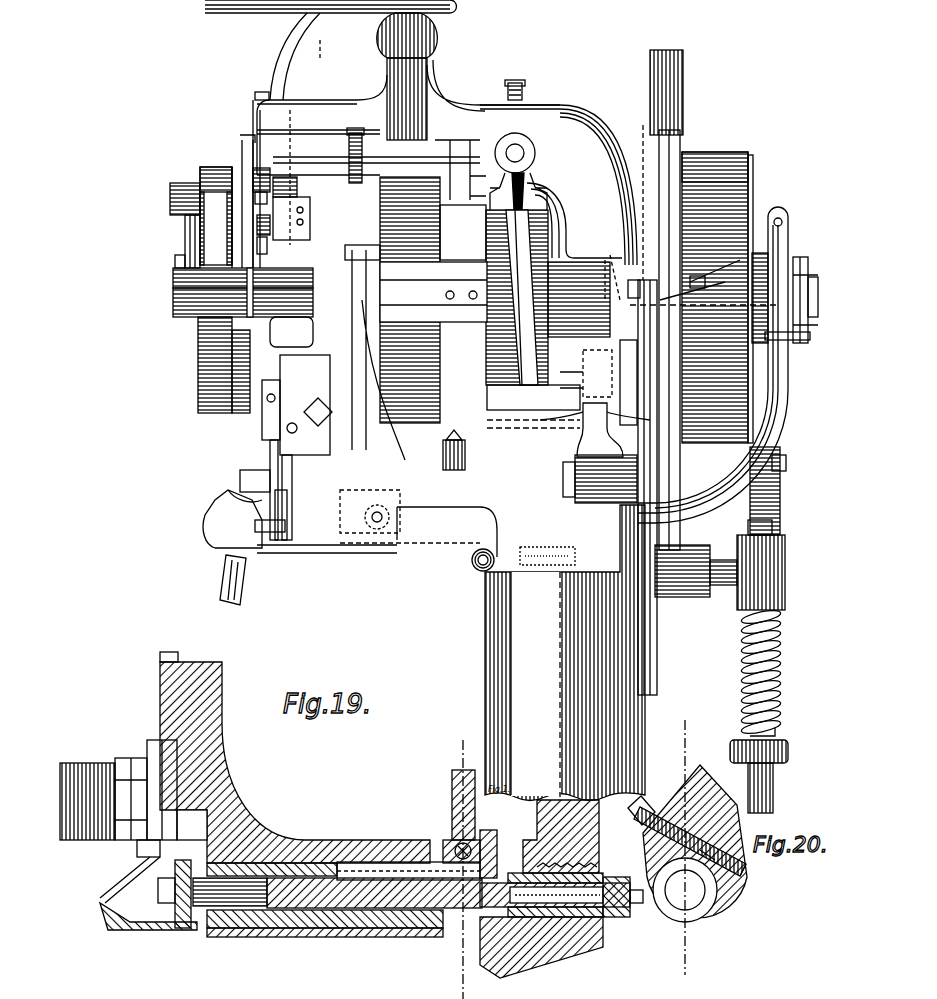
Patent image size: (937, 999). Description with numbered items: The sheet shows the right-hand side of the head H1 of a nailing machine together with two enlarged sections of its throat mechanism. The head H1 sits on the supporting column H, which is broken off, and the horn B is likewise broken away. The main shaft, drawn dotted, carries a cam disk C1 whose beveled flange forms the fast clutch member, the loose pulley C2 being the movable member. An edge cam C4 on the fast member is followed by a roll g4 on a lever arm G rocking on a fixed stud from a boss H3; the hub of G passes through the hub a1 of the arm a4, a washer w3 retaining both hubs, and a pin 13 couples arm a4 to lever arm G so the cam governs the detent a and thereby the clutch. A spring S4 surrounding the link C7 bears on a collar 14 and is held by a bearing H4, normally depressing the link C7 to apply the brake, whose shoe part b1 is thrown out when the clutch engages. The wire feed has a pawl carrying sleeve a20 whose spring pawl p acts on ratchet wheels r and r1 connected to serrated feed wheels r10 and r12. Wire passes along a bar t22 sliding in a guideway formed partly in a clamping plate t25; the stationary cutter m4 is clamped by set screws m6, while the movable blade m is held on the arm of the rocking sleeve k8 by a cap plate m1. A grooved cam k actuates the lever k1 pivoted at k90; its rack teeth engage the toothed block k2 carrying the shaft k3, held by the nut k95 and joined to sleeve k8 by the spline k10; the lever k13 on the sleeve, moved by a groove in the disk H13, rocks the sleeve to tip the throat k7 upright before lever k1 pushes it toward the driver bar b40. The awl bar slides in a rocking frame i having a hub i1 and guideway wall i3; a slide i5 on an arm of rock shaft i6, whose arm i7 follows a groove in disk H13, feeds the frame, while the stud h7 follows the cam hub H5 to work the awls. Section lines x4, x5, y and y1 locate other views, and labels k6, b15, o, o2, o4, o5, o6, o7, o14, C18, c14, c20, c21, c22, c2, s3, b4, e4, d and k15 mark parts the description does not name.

In FIG. 1, the pivot k90 is at (515, 150).
In FIG. 1, the head H1 is at (262, 125).
In FIG. 19, the head H1 is at (222, 725).
In FIG. 1, the lever k1 is at (530, 180).
In FIG. 20, the lever k1 is at (537, 820).
In FIG. 1, the peripherally grooved cam k is at (490, 222).
In FIG. 1, the disk H13 is at (472, 215).
In FIG. 1, the sleeve-like hub i1 is at (385, 285).
In FIG. 1, the pawl carrying sleeve a20 is at (357, 253).
In FIG. 1, the roller or stud h7 is at (205, 175).
In FIG. 1, the cam hub H5 is at (240, 148).
In FIG. 1, the driver bar b40 is at (262, 92).
In FIG. 1, the flange k6 is at (185, 225).
In FIG. 1, the toothed block k2 is at (180, 272).
In FIG. 20, the toothed block k2 is at (600, 872).
In FIG. 1, the shaft k3 is at (200, 292).
In FIG. 19, the shaft k3 is at (300, 862).
In FIG. 20, the shaft k3 is at (732, 895).
In FIG. 1, the rocking frame i is at (210, 385).
In FIG. 1, the feed wheel r10 is at (356, 133).
In FIG. 1, the ratchet wheel r is at (292, 198).
In FIG. 1, the ratchet wheel r1 is at (262, 171).
In FIG. 1, the feed wheel r12 is at (267, 216).
In FIG. 1, the spring pawl p is at (240, 228).
In FIG. 1, the section line x5 is at (284, 177).
In FIG. 1, the section line x4 is at (317, 50).
In FIG. 1, the arm i7 is at (360, 330).
In FIG. 1, the dove-tailed slide i5 is at (330, 385).
In FIG. 1, the rock shaft i6 is at (340, 420).
In FIG. 1, the guideway wall i3 is at (262, 400).
In FIG. 1, the movable cutting blade m is at (210, 520).
In FIG. 19, the movable cutting blade m is at (220, 840).
In FIG. 1, the stationary cutter m4 is at (240, 478).
In FIG. 1, the set screws m6 is at (228, 492).
In FIG. 1, the clamping plate t25 is at (274, 540).
In FIG. 1, the bar t22 is at (292, 520).
In FIG. 1, the rod o7 is at (280, 560).
In FIG. 1, the plate b15 is at (255, 550).
In FIG. 1, the horn B is at (222, 590).
In FIG. 1, the lever o is at (430, 545).
In FIG. 1, the lever part o14 is at (367, 494).
In FIG. 1, the pivot o6 is at (392, 505).
In FIG. 1, the lever part o5 is at (395, 545).
In FIG. 1, the pivot o4 is at (476, 568).
In FIG. 1, the rack o2 is at (490, 580).
In FIG. 1, the supporting column H is at (490, 650).
In FIG. 1, the lever C18 is at (608, 269).
In FIG. 1, the edge cam C4 is at (644, 404).
In FIG. 1, the block c20 is at (626, 304).
In FIG. 1, the block c22 is at (597, 373).
In FIG. 1, the bar c21 is at (598, 382).
In FIG. 1, the slide s3 is at (585, 415).
In FIG. 1, the bar c14 is at (525, 406).
In FIG. 1, the lever k13 is at (466, 455).
In FIG. 19, the lever k13 is at (455, 790).
In FIG. 20, the lever k13 is at (690, 785).
In FIG. 1, the boss H3 is at (590, 485).
In FIG. 1, the pin or stud 13 is at (640, 530).
In FIG. 1, the curved plate b4 is at (680, 512).
In FIG. 1, the brake shoe part b1 is at (683, 175).
In FIG. 1, the movable clutch member C2 is at (740, 152).
In FIG. 1, the cam disk C1 is at (758, 170).
In FIG. 1, the plate c2 is at (762, 255).
In FIG. 1, the detent a is at (790, 250).
In FIG. 1, the roll or stud g4 is at (735, 250).
In FIG. 1, the lever arm G is at (705, 288).
In FIG. 1, the knob e4 is at (818, 298).
In FIG. 1, the plate d is at (810, 336).
In FIG. 1, the arm a4 is at (790, 385).
In FIG. 1, the washer w3 is at (786, 460).
In FIG. 1, the hub a1 is at (780, 475).
In FIG. 1, the bearing H4 is at (785, 580).
In FIG. 1, the spring S4 is at (784, 690).
In FIG. 1, the collar 14 is at (790, 750).
In FIG. 1, the rod or link C7 is at (774, 792).
In FIG. 19, the cap plate m1 is at (230, 830).
In FIG. 19, the hollow sleeve k8 is at (320, 930).
In FIG. 20, the hollow sleeve k8 is at (720, 930).
In FIG. 19, the spline k10 is at (385, 862).
In FIG. 19, the bolt k15 is at (458, 846).
In FIG. 20, the bolt k15 is at (745, 870).
In FIG. 19, the section line y1 is at (462, 862).
In FIG. 19, the throat k7 is at (165, 925).
In FIG. 20, the nut k95 is at (612, 918).
In FIG. 20, the section line y is at (679, 847).